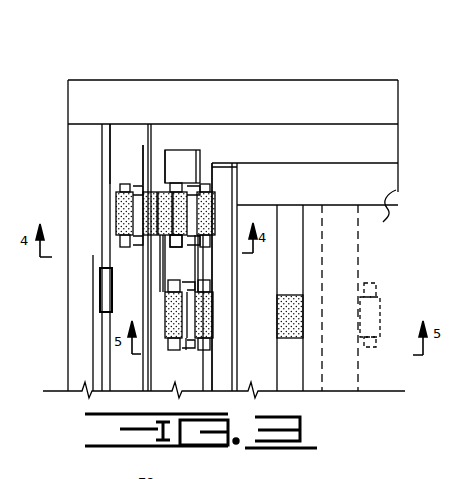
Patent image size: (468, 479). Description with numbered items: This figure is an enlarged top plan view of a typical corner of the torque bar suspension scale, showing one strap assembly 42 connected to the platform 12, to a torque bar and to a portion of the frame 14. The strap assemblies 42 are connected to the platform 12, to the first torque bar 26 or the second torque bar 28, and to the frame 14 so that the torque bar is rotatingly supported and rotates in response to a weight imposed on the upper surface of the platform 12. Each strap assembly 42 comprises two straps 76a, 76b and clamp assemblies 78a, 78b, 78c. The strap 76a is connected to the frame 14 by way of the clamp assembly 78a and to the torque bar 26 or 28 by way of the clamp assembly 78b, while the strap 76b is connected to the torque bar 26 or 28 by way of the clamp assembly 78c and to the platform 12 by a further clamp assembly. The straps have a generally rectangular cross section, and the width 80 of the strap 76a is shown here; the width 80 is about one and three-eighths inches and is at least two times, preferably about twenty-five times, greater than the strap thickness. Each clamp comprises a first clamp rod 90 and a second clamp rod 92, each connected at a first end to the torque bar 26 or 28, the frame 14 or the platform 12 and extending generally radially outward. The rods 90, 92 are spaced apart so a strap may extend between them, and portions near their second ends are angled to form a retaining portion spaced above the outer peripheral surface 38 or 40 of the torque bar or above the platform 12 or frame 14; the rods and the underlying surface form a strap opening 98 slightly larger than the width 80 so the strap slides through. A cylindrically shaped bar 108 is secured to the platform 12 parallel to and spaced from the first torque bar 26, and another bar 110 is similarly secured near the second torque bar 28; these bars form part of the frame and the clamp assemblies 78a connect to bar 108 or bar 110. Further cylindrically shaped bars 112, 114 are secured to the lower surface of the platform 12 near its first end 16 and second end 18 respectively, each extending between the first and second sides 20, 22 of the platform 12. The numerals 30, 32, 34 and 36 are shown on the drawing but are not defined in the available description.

The platform 12 is at (393, 156).
The frame 14 is at (276, 91).
The first end of the platform 16 is at (290, 310).
The second end of the platform 18 is at (208, 358).
The first side of the platform 20 is at (318, 222).
The second side of the platform 22 is at (305, 163).
The first torque bar 26 is at (104, 268).
The second torque bar 28 is at (177, 260).
The panel 30 is at (251, 202).
The panel 32 is at (251, 202).
The panel 34 is at (251, 202).
The panel 36 is at (182, 148).
The outer peripheral surface of the first torque bar 38 is at (95, 224).
The outer peripheral surface of the second torque bar 40 is at (148, 184).
The strap assembly 42 is at (110, 182).
The strap 76a is at (118, 213).
The strap 76b is at (208, 313).
The clamp assembly 78a is at (118, 166).
The clamp assembly 78b is at (193, 152).
The clamp assembly 78c is at (180, 347).
The width of the strap 80 is at (207, 207).
The first clamp rod 90 is at (172, 242).
The second clamp rod 92 is at (167, 160).
The strap opening 98 is at (188, 317).
The cylindrically shaped bar 108 is at (120, 106).
The cylindrically shaped bar 110 is at (137, 127).
The cylindrically shaped bar 112 is at (398, 303).
The cylindrically shaped bar 114 is at (344, 275).